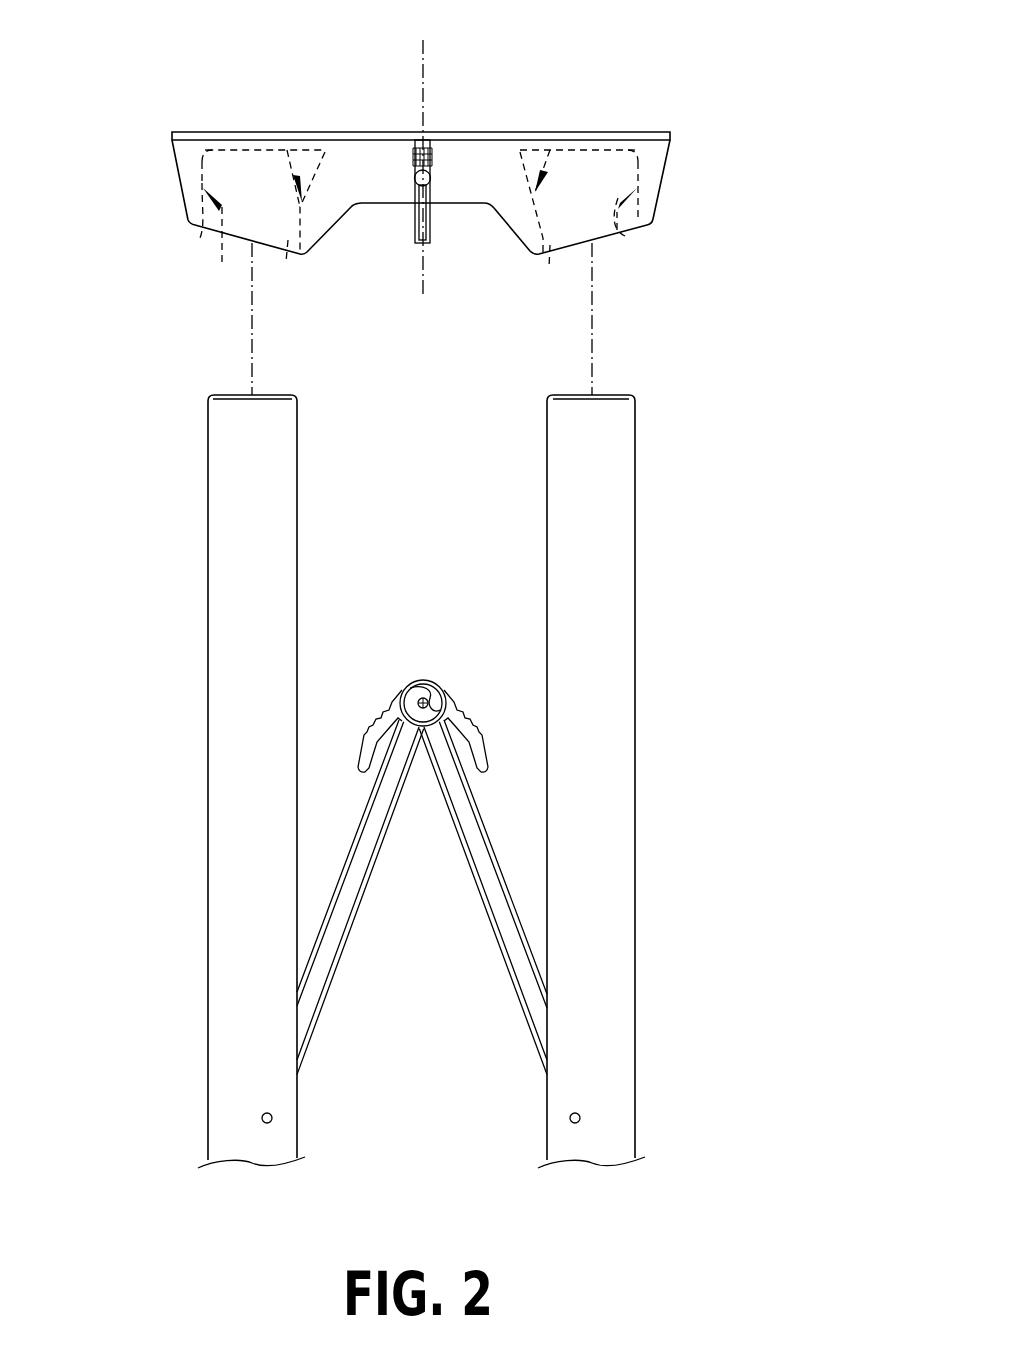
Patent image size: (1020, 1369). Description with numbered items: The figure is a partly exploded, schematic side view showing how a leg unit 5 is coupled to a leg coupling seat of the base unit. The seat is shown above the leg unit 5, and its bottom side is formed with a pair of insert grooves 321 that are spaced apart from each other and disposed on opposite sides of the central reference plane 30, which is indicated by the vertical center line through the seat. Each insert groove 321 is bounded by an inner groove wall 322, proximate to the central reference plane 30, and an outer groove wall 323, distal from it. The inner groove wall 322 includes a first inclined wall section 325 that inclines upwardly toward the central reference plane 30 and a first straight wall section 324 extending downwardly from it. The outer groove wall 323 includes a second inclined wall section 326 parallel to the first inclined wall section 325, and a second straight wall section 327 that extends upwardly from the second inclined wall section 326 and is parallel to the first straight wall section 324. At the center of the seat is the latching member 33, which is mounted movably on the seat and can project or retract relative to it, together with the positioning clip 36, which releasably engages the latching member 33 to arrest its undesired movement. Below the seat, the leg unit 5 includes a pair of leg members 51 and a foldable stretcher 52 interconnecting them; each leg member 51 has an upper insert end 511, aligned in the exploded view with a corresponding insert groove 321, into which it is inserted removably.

The central reference plane 30 is at (423, 277).
The latching member 33 is at (417, 232).
The positioning clip 36 is at (413, 168).
The insert groove 321 is at (243, 168).
The inner groove wall 322 is at (287, 150).
The outer groove wall 323 is at (222, 262).
The first straight wall section 324 is at (286, 262).
The first inclined wall section 325 is at (320, 148).
The second inclined wall section 326 is at (200, 238).
The second straight wall section 327 is at (205, 150).
The leg unit 5 is at (424, 781).
The leg member 51 is at (247, 593).
The upper insert end 511 is at (225, 417).
The foldable stretcher 52 is at (483, 850).